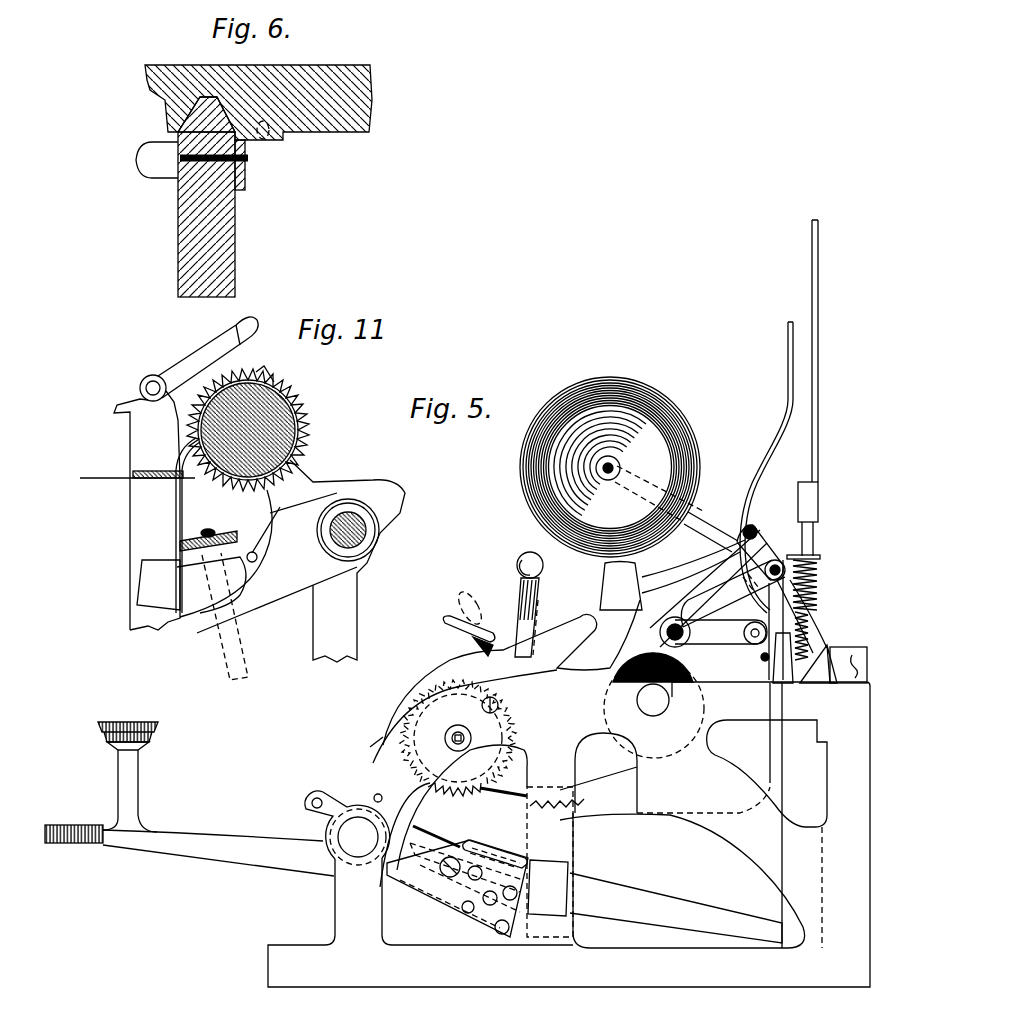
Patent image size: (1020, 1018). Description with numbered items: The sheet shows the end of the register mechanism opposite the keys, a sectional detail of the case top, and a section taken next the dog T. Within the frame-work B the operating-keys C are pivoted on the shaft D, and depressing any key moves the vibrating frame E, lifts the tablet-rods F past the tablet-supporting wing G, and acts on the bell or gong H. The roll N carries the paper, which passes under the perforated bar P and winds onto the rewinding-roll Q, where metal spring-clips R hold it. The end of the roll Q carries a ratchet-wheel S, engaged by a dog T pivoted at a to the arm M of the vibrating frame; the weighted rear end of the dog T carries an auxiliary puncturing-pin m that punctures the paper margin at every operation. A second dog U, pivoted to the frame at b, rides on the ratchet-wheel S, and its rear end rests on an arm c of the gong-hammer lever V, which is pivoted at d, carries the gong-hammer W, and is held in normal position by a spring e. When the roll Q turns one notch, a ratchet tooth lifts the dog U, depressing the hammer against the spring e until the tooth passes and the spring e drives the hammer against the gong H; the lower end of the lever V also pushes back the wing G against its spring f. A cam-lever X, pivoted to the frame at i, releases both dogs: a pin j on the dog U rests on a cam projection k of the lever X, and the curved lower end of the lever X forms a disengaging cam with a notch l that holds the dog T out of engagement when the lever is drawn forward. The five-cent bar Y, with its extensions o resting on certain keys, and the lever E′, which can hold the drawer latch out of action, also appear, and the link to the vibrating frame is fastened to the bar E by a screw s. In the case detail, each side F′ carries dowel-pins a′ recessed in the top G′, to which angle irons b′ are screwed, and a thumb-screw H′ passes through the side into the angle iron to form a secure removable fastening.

In FIG. 6, the top of the case G′ is at (258, 91).
In FIG. 6, the side of the case F′ is at (233, 250).
In FIG. 6, the thumb-screw H′ is at (192, 160).
In FIG. 6, the dowel-pins a′ is at (200, 110).
In FIG. 6, the angle irons b′ is at (283, 143).
In FIG. 11, the rewinding-roll Q is at (248, 430).
In FIG. 11, the ratchet-wheel S is at (290, 388).
In FIG. 5, the ratchet-wheel S is at (477, 801).
In FIG. 11, the pivot of dog U b is at (147, 510).
In FIG. 11, the gong-hammer lever V is at (199, 359).
In FIG. 5, the gong-hammer lever V is at (766, 530).
In FIG. 11, the metal spring-clips R is at (263, 374).
In FIG. 11, the perforated bar P is at (137, 461).
In FIG. 11, the shaft D is at (301, 561).
In FIG. 5, the shaft D is at (347, 828).
In FIG. 11, the pivot of dog T a is at (258, 557).
In FIG. 5, the pivot of dog T a is at (436, 843).
In FIG. 11, the vibrating frame E is at (196, 540).
In FIG. 5, the vibrating frame E is at (495, 845).
In FIG. 11, the screw or other fastening s is at (211, 526).
In FIG. 11, the dog T is at (192, 616).
In FIG. 5, the dog T is at (550, 862).
In FIG. 11, the auxiliary puncturing-pin m is at (168, 556).
In FIG. 5, the auxiliary puncturing-pin m is at (556, 848).
In FIG. 5, the bell or gong H is at (629, 467).
In FIG. 5, the tablet-rods F is at (815, 388).
In FIG. 5, the pivot of lever V d is at (813, 554).
In FIG. 5, the gong-hammer W is at (641, 584).
In FIG. 5, the arm c is at (717, 588).
In FIG. 5, the tablet-supporting wing G is at (840, 650).
In FIG. 5, the spring e is at (820, 684).
In FIG. 5, the spring f is at (852, 684).
In FIG. 5, the frame-work B is at (569, 834).
In FIG. 5, the roll N is at (654, 705).
In FIG. 5, the extensions o is at (665, 773).
In FIG. 5, the operating-keys C is at (189, 799).
In FIG. 5, the arm of the vibrating frame M is at (457, 888).
In FIG. 5, the five-cent bar Y is at (466, 854).
In FIG. 5, the cam-lever X is at (506, 693).
In FIG. 5, the pivot of cam-lever X i is at (499, 705).
In FIG. 5, the lever E′ is at (536, 604).
In FIG. 5, the dog U is at (461, 622).
In FIG. 5, the pin or projection j is at (470, 643).
In FIG. 5, the cam projection k is at (470, 661).
In FIG. 5, the shoulder or engaging-notch l is at (374, 740).